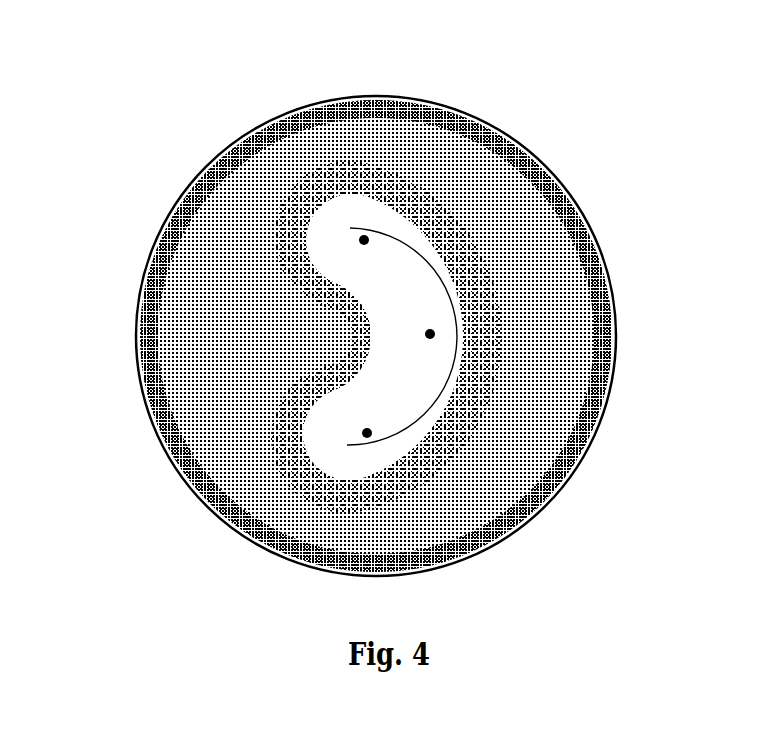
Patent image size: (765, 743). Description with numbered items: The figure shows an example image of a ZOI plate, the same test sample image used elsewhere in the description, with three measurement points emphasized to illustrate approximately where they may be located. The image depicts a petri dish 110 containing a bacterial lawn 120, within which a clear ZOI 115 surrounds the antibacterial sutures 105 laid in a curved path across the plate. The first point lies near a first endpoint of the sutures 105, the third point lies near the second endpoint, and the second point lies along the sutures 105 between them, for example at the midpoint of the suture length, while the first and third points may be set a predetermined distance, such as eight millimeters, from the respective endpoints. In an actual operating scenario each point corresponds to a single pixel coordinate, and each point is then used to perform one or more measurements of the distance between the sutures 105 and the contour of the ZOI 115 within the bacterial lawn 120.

The antibacterial sutures 105 is at (417, 288).
The petri dish 110 is at (213, 163).
The ZOI 115 is at (388, 365).
The bacterial lawn 120 is at (434, 150).